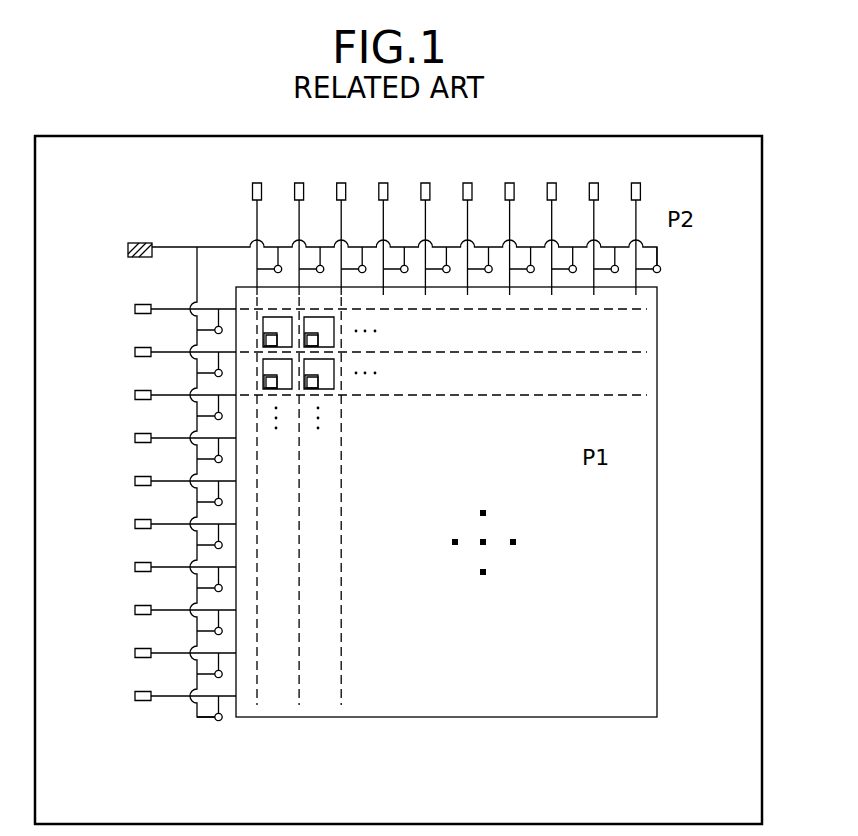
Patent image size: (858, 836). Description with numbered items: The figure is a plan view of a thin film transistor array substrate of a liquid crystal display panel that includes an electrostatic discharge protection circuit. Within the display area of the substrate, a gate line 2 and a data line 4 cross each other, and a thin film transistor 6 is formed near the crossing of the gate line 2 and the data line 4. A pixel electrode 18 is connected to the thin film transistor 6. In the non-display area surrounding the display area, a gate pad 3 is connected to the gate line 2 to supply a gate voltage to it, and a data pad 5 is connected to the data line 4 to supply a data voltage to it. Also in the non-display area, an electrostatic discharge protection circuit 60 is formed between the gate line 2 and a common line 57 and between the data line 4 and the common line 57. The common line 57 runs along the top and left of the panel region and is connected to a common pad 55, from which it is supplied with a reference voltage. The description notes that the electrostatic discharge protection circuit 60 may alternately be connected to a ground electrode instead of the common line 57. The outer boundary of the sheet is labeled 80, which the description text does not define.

The gate line 2 is at (610, 309).
The gate pad 3 is at (140, 304).
The data line 4 is at (342, 453).
The data pad 5 is at (252, 186).
The thin film transistor 6 is at (328, 389).
The pixel electrode 18 is at (334, 367).
The common pad 55 is at (140, 243).
The common line 57 is at (222, 247).
The electrostatic discharge protection circuit 60 is at (661, 269).
The substrate 80 is at (763, 478).